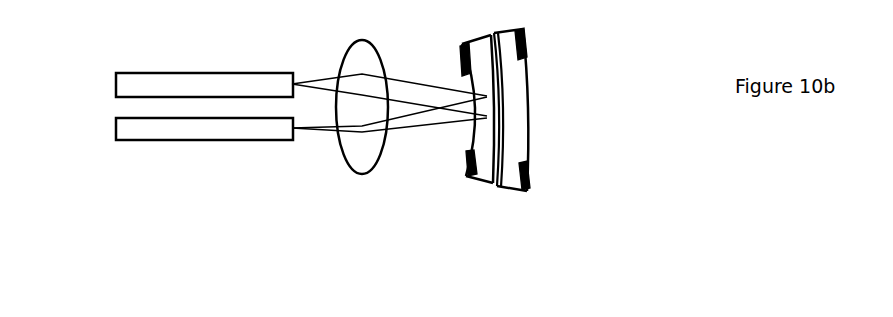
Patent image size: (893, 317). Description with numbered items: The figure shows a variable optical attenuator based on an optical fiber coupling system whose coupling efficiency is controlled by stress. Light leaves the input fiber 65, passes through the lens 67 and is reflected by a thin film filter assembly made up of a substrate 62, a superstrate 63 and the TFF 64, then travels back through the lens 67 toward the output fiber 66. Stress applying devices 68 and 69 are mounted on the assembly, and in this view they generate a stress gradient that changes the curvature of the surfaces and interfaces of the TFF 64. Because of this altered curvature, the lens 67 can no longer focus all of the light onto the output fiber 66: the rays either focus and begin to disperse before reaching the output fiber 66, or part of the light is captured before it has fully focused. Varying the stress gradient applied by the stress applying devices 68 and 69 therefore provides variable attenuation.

The substrate 62 is at (487, 160).
The superstrate 63 is at (527, 102).
The TFF 64 is at (487, 40).
The input fiber 65 is at (136, 83).
The output fiber 66 is at (138, 140).
The lens 67 is at (370, 162).
The stress applying device 68 is at (527, 43).
The stress applying device 69 is at (467, 161).